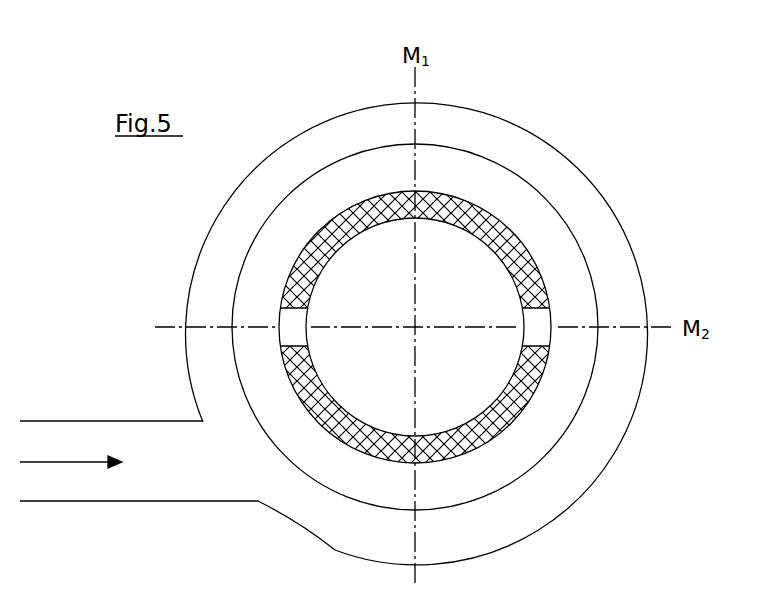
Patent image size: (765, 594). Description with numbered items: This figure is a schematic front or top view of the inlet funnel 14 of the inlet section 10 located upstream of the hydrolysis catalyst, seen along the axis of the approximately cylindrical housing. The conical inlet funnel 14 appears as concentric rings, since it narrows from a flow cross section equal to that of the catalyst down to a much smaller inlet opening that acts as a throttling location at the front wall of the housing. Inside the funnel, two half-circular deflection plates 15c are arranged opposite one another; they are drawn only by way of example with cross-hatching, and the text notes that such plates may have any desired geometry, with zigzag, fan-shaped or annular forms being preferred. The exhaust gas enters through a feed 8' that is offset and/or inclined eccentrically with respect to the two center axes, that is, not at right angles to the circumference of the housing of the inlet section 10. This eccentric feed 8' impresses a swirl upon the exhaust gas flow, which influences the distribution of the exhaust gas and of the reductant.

The inlet section 10 is at (473, 123).
The inlet funnel 14 is at (598, 297).
The deflection plates 15c is at (477, 205).
The feed 8' is at (177, 440).